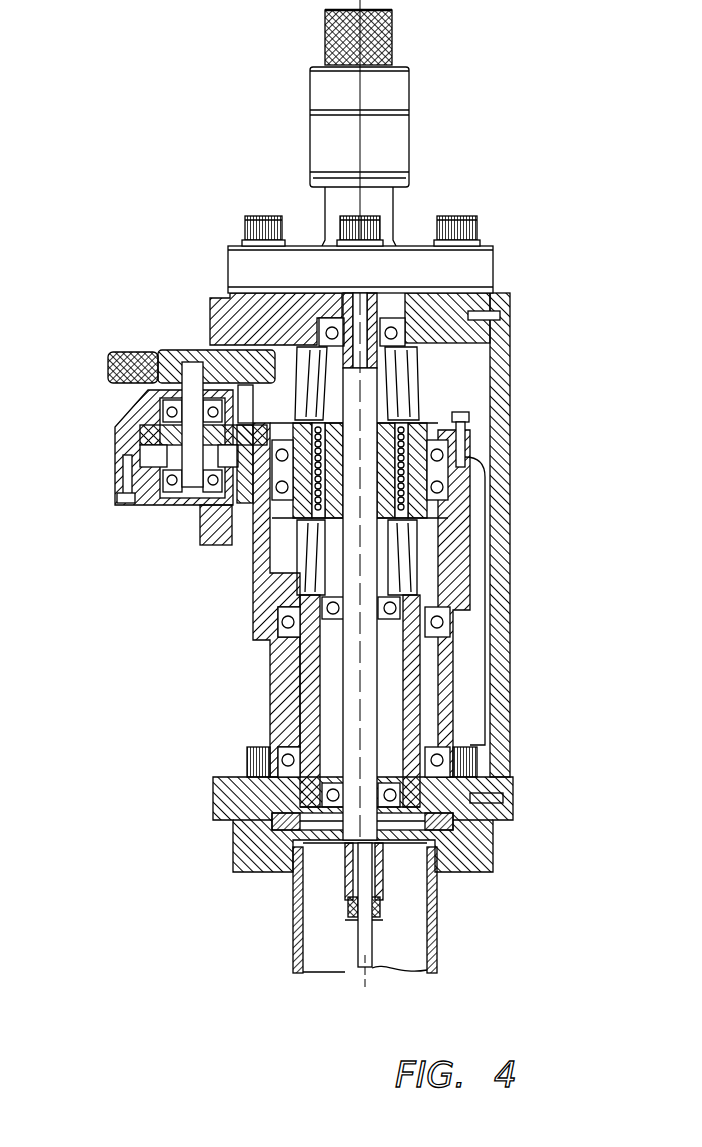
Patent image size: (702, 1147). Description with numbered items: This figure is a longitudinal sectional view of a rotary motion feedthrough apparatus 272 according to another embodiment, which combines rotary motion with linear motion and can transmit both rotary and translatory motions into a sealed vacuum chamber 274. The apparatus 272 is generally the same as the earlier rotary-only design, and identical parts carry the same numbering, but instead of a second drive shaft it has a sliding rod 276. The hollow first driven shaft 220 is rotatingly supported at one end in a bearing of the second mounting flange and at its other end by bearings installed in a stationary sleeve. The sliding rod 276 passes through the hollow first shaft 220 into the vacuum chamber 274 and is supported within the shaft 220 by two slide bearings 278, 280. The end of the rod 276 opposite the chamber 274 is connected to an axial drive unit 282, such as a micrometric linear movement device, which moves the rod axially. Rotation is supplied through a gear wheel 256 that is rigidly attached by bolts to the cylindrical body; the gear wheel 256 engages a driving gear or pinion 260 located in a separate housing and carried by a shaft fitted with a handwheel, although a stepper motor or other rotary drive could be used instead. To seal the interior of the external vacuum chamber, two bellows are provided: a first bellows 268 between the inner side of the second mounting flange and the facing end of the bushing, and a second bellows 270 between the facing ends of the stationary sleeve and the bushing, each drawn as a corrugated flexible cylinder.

The first driven shaft 220 is at (363, 397).
The gear wheel 256 is at (257, 445).
The driving gear or pinion 260 is at (143, 427).
The first bellows 268 is at (403, 397).
The second bellows 270 is at (407, 557).
The rotary motion feedthrough apparatus 272 is at (217, 598).
The sealed vacuum chamber 274 is at (276, 907).
The sliding rod 276 is at (362, 947).
The slide bearing 278 is at (353, 300).
The slide bearing 280 is at (383, 908).
The axial drive unit 282 is at (325, 85).